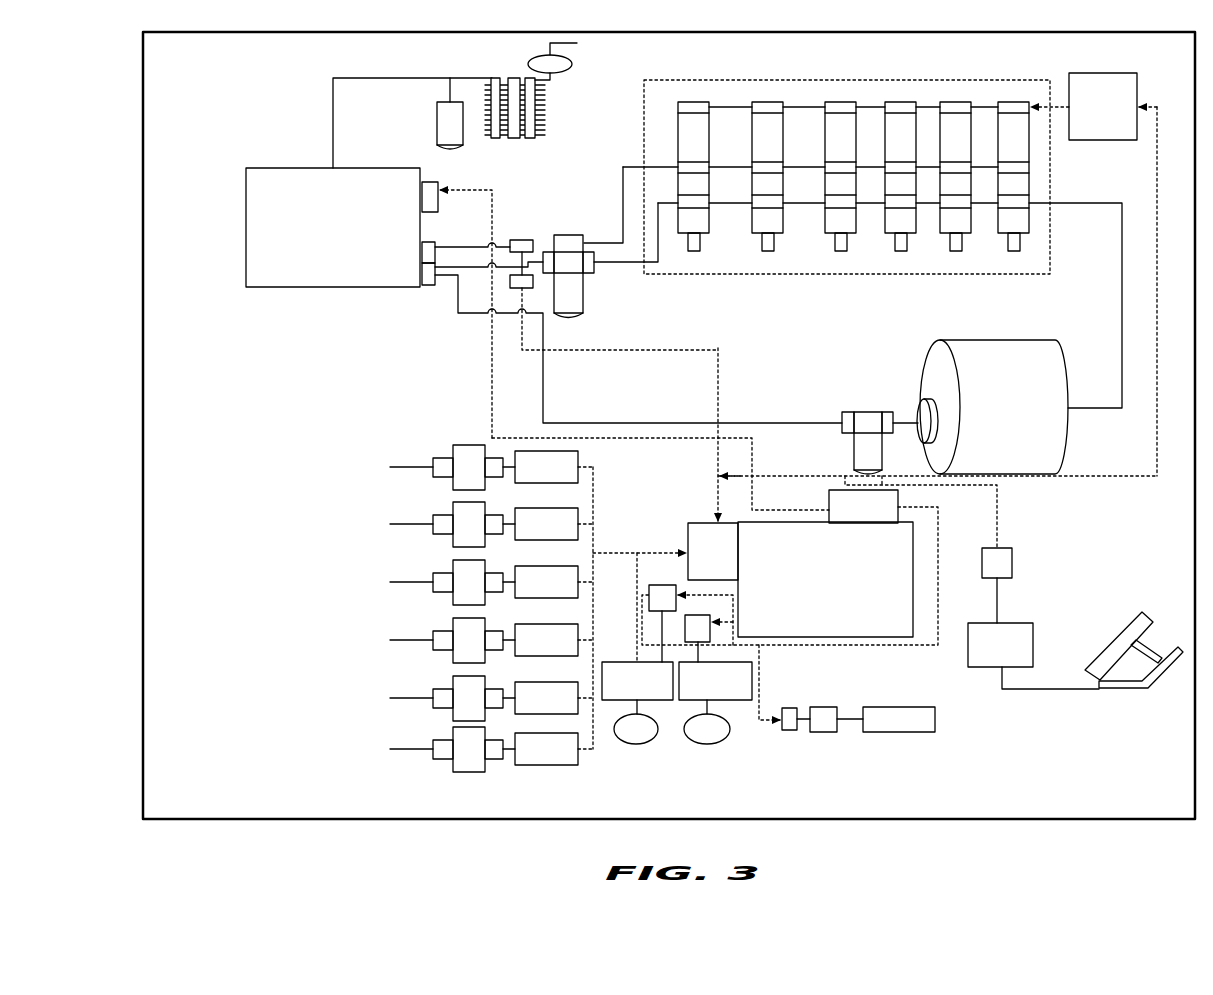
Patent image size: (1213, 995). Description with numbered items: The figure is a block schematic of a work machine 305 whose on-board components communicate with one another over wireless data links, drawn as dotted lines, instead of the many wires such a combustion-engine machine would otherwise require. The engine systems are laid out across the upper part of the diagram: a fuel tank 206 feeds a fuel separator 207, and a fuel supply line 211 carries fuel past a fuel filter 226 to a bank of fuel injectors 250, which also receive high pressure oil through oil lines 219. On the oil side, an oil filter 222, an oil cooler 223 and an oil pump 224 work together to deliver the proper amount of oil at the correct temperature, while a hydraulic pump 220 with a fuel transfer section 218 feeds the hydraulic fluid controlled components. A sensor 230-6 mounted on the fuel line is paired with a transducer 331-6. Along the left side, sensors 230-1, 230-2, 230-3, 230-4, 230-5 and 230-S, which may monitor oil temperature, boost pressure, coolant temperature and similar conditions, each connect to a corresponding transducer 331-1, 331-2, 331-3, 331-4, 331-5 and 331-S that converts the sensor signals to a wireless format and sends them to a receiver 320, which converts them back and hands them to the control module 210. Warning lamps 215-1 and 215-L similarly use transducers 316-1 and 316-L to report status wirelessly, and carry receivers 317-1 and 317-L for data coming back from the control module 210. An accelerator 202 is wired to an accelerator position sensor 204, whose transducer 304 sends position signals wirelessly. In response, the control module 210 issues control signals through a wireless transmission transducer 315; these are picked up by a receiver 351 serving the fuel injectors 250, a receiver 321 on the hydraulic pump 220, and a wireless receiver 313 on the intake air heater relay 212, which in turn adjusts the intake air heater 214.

The work machine 305 is at (313, 807).
The oil filter 222 is at (435, 137).
The oil cooler 223 is at (516, 140).
The oil pump 224 is at (575, 60).
The fuel injectors 250 is at (874, 94).
The oil lines 219 is at (662, 163).
The fuel supply line 211 is at (1119, 233).
The receiver 351 is at (1140, 124).
The hydraulic pump 220 is at (347, 257).
The receiver 321 is at (433, 179).
The fuel transfer 218 is at (427, 289).
The sensor 230-6 is at (537, 222).
The transducer 331-6 is at (507, 282).
The fuel filter 226 is at (589, 292).
The fuel separator 207 is at (869, 410).
The fuel tank 206 is at (1025, 410).
The sensor 230-1 is at (451, 450).
The sensor 230-2 is at (451, 507).
The sensor 230-3 is at (451, 565).
The sensor 230-4 is at (451, 623).
The sensor 230-5 is at (451, 681).
The sensor 230-S is at (451, 732).
The transducer 331-1 is at (572, 478).
The transducer 331-2 is at (572, 535).
The transducer 331-3 is at (572, 593).
The transducer 331-4 is at (572, 651).
The transducer 331-5 is at (572, 709).
The transducer 331-S is at (572, 760).
The receiver 320 is at (732, 567).
The wireless transmission transducer 315 is at (886, 519).
The control module 210 is at (840, 599).
The receiver 317-1 is at (659, 582).
The receiver 317-L is at (701, 612).
The transducer 316-1 is at (664, 694).
The transducer 316-L is at (742, 694).
The warning lamp 215-1 is at (616, 742).
The warning lamp 215-L is at (731, 731).
The wireless receiver 313 is at (805, 706).
The intake air heater relay 212 is at (823, 733).
The intake air heater 214 is at (929, 704).
The transducer 304 is at (1058, 530).
The accelerator position sensor 204 is at (1078, 623).
The accelerator 202 is at (1098, 691).